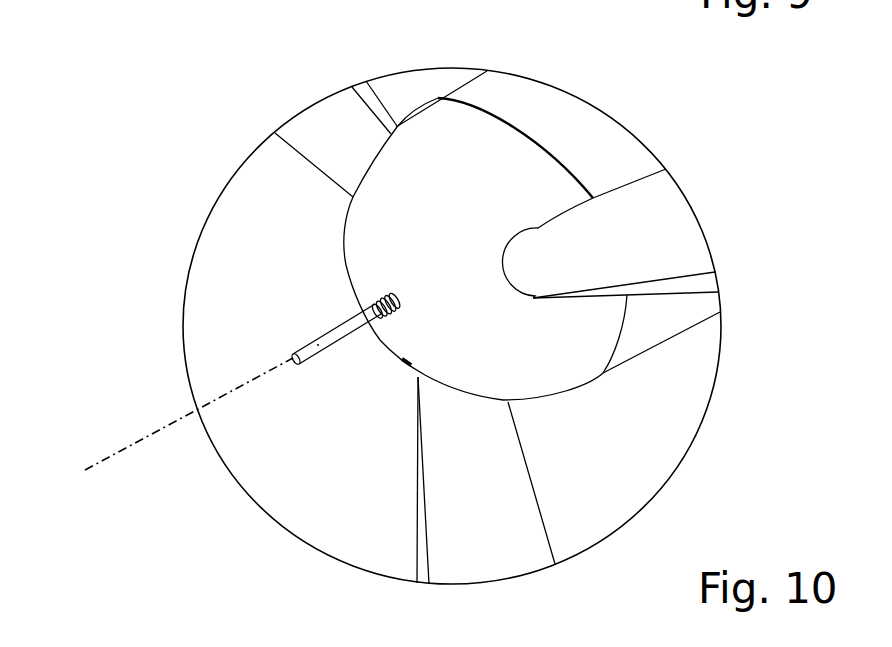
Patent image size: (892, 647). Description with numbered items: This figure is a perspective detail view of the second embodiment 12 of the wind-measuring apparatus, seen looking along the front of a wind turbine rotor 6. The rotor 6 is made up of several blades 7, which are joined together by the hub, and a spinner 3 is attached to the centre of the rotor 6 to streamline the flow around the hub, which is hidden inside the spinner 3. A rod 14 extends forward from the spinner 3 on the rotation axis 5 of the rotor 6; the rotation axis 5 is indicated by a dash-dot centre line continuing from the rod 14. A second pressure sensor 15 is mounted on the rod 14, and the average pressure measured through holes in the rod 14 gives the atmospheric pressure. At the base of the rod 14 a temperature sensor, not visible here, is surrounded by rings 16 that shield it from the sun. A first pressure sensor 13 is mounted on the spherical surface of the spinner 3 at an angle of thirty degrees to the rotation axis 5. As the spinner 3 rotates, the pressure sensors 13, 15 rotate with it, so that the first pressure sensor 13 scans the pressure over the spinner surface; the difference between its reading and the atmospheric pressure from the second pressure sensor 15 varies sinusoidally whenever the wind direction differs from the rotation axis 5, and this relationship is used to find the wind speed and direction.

The spinner 3 is at (478, 172).
The rotation axis 5 is at (117, 450).
The rotor 6 is at (310, 228).
The blades 7 is at (336, 144).
The second embodiment 12 is at (196, 86).
The pressure sensor 13 is at (405, 372).
The rod 14 is at (327, 329).
The second pressure sensor 15 is at (327, 365).
The rings 16 is at (392, 294).